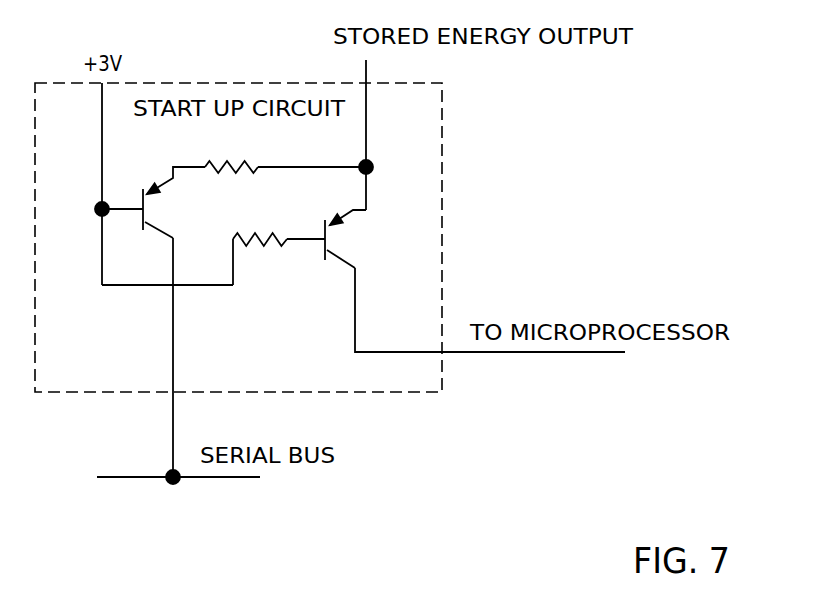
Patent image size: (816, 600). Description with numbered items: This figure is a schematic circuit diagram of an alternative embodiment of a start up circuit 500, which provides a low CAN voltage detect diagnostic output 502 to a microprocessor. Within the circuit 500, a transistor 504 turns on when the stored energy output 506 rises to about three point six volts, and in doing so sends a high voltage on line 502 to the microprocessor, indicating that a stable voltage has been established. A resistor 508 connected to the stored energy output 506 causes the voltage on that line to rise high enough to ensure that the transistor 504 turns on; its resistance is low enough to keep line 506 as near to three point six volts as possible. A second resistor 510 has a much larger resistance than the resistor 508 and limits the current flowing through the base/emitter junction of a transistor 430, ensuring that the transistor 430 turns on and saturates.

The start up circuit 500 is at (482, 187).
The low CAN voltage detect diagnostic output 502 is at (450, 352).
The transistor 504 is at (329, 240).
The stored energy output 506 is at (364, 70).
The resistor 508 is at (233, 160).
The resistor 510 is at (263, 248).
The transistor 430 is at (147, 208).